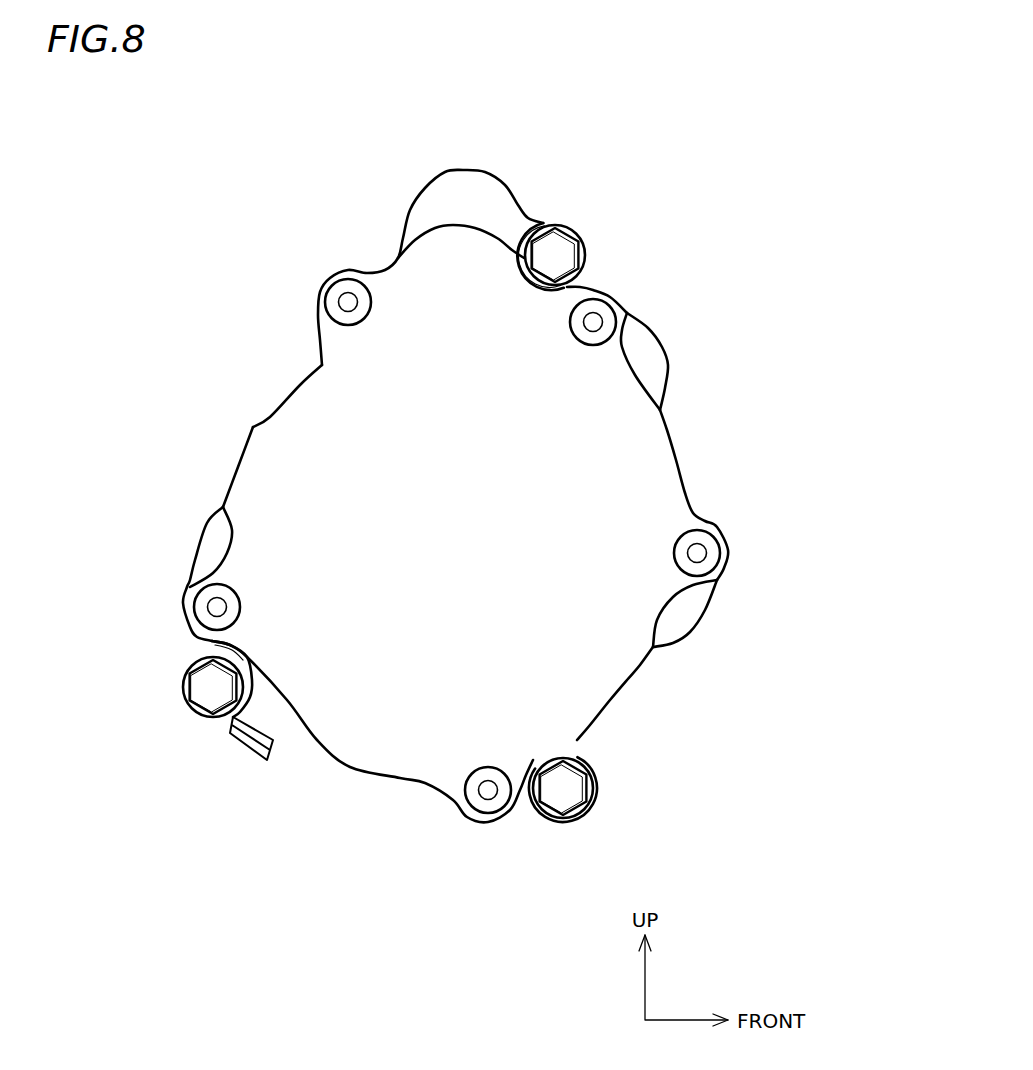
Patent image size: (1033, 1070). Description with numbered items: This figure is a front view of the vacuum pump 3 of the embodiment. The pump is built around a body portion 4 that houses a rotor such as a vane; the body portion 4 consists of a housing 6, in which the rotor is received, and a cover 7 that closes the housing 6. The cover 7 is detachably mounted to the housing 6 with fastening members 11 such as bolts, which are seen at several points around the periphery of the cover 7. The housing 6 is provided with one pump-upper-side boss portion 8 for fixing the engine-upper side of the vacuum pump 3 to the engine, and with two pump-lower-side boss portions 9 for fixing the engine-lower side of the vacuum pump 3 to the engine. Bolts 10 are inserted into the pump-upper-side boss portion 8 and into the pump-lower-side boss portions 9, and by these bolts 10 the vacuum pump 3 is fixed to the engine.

The vacuum pump 3 is at (451, 497).
The body portion 4 is at (480, 167).
The housing 6 is at (443, 187).
The cover 7 is at (340, 345).
The pump-upper-side boss portion 8 is at (553, 227).
The pump-lower-side boss portion 9 is at (200, 713).
The bolt 10 is at (572, 255).
The fastening member 11 is at (343, 282).